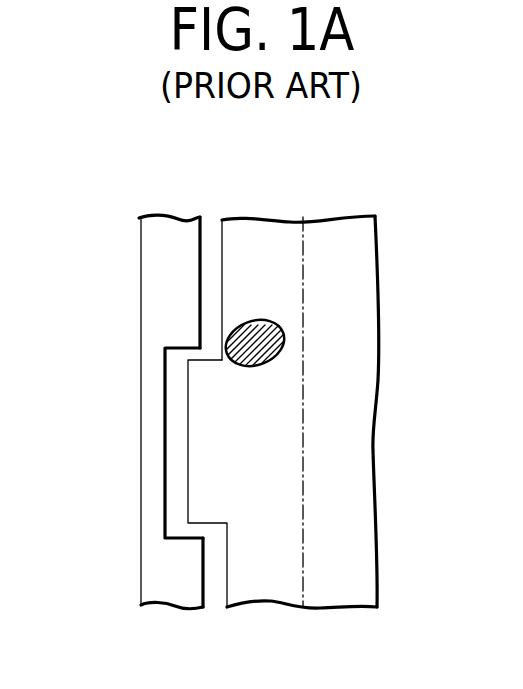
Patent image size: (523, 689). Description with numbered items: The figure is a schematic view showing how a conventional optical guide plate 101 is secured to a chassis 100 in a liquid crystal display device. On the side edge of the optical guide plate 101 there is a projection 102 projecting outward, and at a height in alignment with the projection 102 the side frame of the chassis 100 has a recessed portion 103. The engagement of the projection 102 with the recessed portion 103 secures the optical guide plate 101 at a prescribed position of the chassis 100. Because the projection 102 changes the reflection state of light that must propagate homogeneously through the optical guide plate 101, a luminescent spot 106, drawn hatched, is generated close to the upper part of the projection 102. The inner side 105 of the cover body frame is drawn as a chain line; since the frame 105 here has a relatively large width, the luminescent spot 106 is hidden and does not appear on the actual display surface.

The chassis 100 is at (158, 303).
The optical guide plate 101 is at (247, 240).
The projection 102 is at (210, 480).
The recessed portion 103 is at (165, 458).
The inner side of the frame 105 is at (305, 535).
The luminescent spot 106 is at (260, 320).